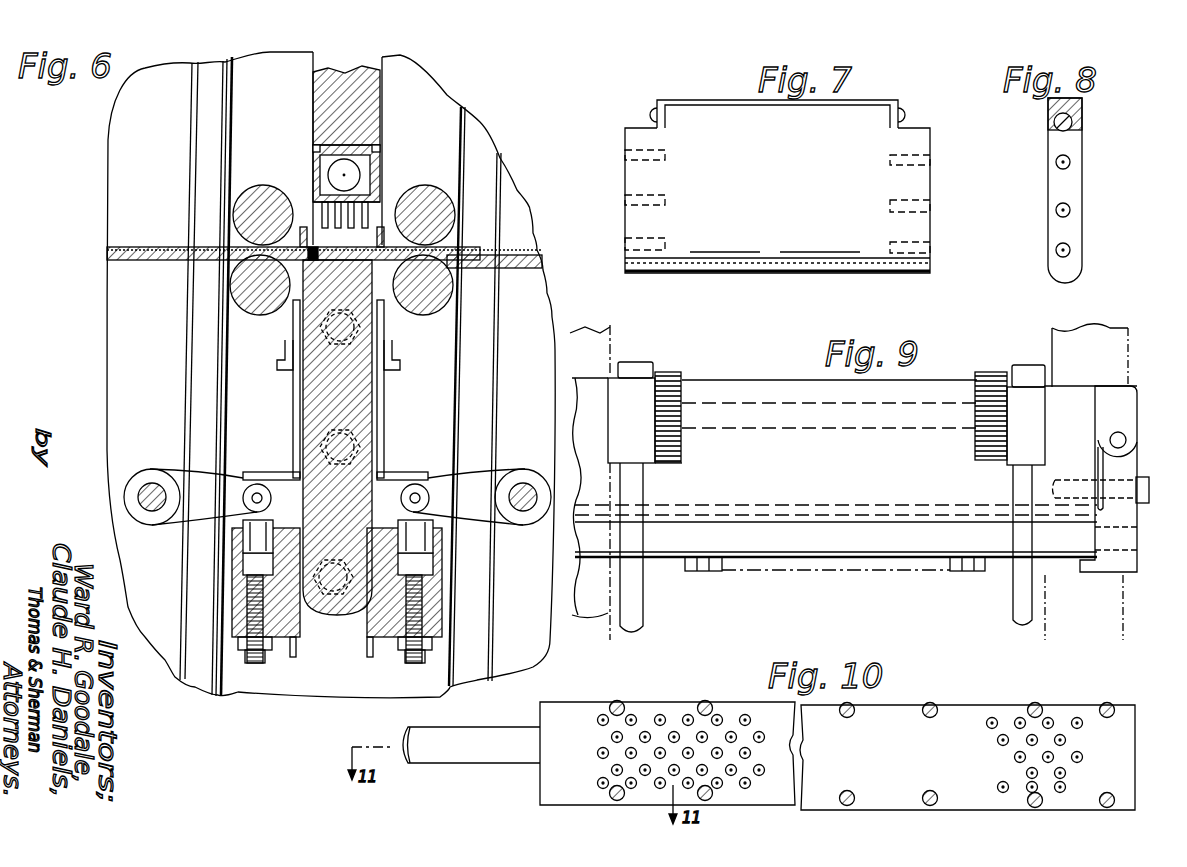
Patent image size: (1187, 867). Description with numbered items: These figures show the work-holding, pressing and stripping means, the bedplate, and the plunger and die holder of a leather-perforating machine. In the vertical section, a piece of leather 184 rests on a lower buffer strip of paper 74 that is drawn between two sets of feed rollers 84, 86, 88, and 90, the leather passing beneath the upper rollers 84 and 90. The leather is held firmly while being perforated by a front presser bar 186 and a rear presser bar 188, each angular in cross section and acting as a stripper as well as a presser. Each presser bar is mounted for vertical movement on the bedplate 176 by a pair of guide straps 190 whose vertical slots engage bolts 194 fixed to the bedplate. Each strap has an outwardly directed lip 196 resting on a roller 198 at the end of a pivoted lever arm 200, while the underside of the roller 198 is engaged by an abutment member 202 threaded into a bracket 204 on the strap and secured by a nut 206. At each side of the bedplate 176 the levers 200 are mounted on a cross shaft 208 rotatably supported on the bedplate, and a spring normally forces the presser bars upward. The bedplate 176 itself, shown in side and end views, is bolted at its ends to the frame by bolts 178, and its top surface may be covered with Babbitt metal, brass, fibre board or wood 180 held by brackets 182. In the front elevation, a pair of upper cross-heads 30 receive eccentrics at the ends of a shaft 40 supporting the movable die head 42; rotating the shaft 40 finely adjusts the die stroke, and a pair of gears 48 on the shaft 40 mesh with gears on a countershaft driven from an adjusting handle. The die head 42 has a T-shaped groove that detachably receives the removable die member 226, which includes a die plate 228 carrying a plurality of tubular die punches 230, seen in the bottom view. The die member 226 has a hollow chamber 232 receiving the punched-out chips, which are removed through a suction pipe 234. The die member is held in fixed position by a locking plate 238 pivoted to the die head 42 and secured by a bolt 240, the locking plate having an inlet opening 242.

In FIG. 9, the upper cross-heads 30 is at (826, 413).
In FIG. 9, the shaft 40 is at (778, 432).
In FIG. 9, the movable die head 42 is at (805, 380).
In FIG. 9, the gears 48 is at (680, 376).
In FIG. 6, the buffer strip of paper 74 is at (505, 259).
In FIG. 6, the feed roller 84 is at (265, 186).
In FIG. 6, the feed roller 86 is at (242, 285).
In FIG. 6, the feed roller 88 is at (440, 302).
In FIG. 6, the feed roller 90 is at (446, 208).
In FIG. 6, the bedplate 176 is at (305, 318).
In FIG. 7, the bedplate 176 is at (810, 258).
In FIG. 8, the bedplate 176 is at (1068, 185).
In FIG. 6, the bolts 178 is at (372, 331).
In FIG. 6, the top surface covering 180 is at (362, 256).
In FIG. 7, the top surface covering 180 is at (722, 100).
In FIG. 7, the brackets 182 is at (657, 101).
In FIG. 8, the brackets 182 is at (1078, 124).
In FIG. 6, the piece of leather 184 is at (440, 244).
In FIG. 6, the front presser bar 186 is at (300, 244).
In FIG. 6, the rear presser bar 188 is at (388, 235).
In FIG. 6, the guide straps 190 is at (296, 390).
In FIG. 6, the bolts 194 is at (276, 363).
In FIG. 6, the lip 196 is at (256, 472).
In FIG. 6, the roller 198 is at (243, 498).
In FIG. 6, the lever arm 200 is at (238, 477).
In FIG. 6, the abutment member 202 is at (433, 532).
In FIG. 6, the bracket 204 is at (436, 600).
In FIG. 6, the nut 206 is at (430, 645).
In FIG. 6, the cross shaft 208 is at (152, 504).
In FIG. 9, the die member 226 is at (836, 531).
In FIG. 10, the die member 226 is at (968, 712).
In FIG. 9, the die plate 228 is at (862, 571).
In FIG. 9, the tubular die punches 230 is at (705, 571).
In FIG. 10, the tubular die punches 230 is at (688, 716).
In FIG. 6, the hollow chamber 232 is at (358, 168).
In FIG. 10, the suction pipe 234 is at (455, 738).
In FIG. 9, the locking plate 238 is at (1130, 562).
In FIG. 9, the bolt 240 is at (1150, 486).
In FIG. 9, the inlet opening 242 is at (1137, 542).